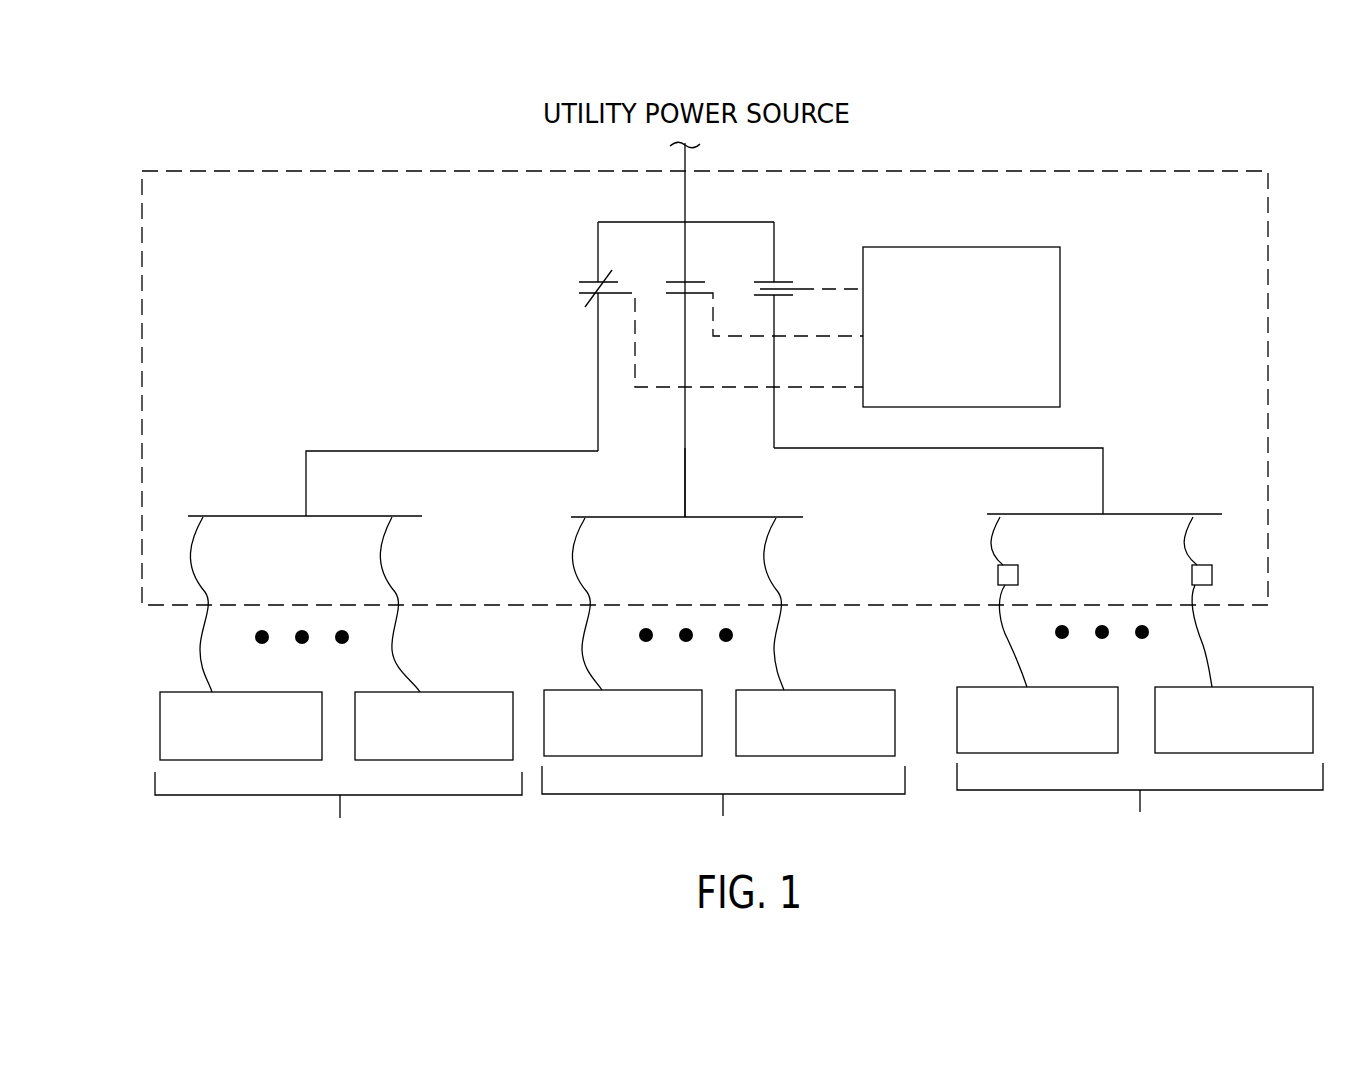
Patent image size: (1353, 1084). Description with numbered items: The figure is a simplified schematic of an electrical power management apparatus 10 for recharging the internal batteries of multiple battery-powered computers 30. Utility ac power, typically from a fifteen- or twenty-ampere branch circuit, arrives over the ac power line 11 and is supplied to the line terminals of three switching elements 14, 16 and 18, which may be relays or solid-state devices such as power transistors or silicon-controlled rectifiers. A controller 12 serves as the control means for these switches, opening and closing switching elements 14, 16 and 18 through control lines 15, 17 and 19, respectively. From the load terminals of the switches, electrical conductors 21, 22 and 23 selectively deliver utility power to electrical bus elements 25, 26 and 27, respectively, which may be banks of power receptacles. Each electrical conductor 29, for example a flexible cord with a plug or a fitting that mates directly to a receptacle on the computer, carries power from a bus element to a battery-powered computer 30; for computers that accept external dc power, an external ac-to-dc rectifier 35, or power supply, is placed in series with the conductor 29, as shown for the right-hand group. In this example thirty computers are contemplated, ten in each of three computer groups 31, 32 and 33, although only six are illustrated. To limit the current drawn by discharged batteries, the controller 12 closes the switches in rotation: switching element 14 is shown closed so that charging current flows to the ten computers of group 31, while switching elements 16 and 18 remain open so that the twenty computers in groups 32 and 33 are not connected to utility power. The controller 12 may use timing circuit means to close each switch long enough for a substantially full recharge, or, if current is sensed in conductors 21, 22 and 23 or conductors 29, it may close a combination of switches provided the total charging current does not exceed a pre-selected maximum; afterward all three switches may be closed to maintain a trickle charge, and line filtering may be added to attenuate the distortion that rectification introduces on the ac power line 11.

The electrical power management apparatus 10 is at (912, 152).
The ac power line 11 is at (683, 198).
The controller 12 is at (953, 247).
The switching element 14 is at (587, 265).
The control line 15 is at (812, 289).
The switching element 16 is at (673, 268).
The control line 17 is at (802, 336).
The switching element 18 is at (758, 271).
The control line 19 is at (805, 388).
The electrical conductor 21 is at (453, 448).
The electrical conductor 22 is at (686, 476).
The electrical conductor 23 is at (930, 450).
The electrical bus element 25 is at (238, 516).
The electrical bus element 26 is at (622, 516).
The electrical bus element 27 is at (1038, 513).
The electrical conductor 29 is at (197, 673).
The battery-powered computer 30 is at (160, 724).
The computer group 31 is at (338, 812).
The computer group 32 is at (723, 808).
The computer group 33 is at (1140, 806).
The external ac-to-dc rectifier 35 is at (998, 578).